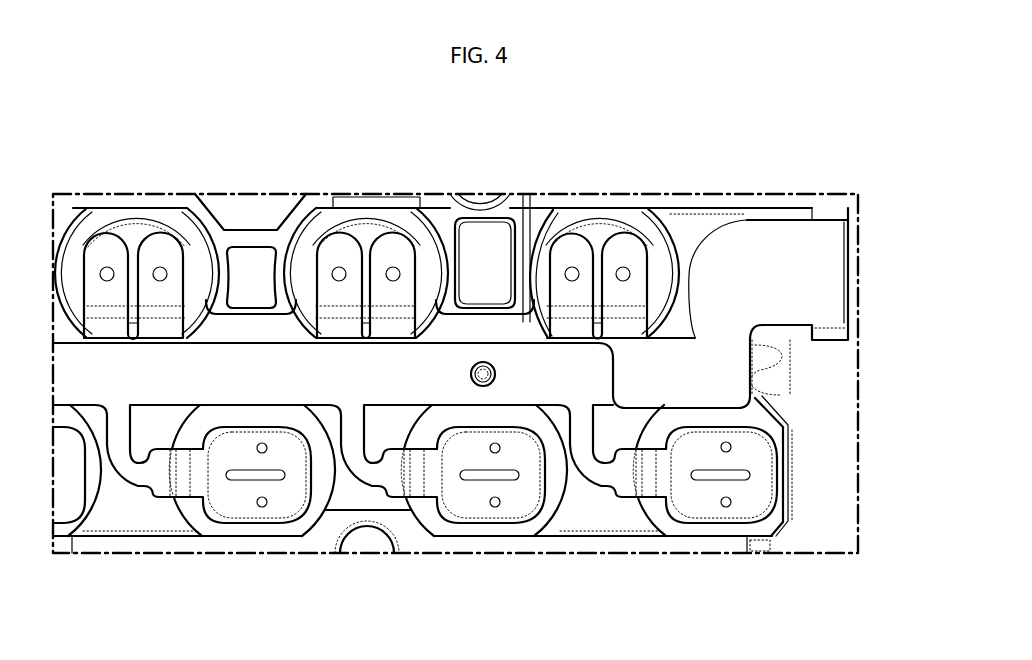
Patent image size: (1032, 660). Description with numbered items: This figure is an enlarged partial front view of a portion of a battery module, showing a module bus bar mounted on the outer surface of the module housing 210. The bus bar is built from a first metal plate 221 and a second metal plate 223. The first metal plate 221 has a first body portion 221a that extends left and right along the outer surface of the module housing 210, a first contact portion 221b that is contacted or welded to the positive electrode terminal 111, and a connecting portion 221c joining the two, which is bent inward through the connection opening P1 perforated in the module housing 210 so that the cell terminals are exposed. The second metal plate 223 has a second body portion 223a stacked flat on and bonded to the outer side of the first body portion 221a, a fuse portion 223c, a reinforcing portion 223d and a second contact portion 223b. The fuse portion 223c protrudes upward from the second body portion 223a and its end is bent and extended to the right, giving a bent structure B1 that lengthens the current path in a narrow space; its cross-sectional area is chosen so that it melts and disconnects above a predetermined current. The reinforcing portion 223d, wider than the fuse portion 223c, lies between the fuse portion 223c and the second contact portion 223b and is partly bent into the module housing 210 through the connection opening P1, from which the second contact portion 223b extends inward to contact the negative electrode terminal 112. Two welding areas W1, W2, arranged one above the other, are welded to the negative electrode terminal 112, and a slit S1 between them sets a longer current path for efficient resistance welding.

The module housing 210 is at (245, 207).
The positive electrode terminal 111 is at (370, 232).
The first metal plate 221 is at (672, 134).
The first body portion 221a is at (623, 237).
The first contact portion 221b is at (574, 241).
The connecting portion 221c is at (553, 325).
The connection opening P1 is at (633, 362).
The negative electrode terminal 112 is at (778, 411).
The welding area W1 is at (727, 447).
The slit S1 is at (750, 474).
The welding area W2 is at (727, 503).
The bent structure B1 is at (596, 472).
The second body portion 223a is at (444, 383).
The fuse portion 223c is at (582, 446).
The reinforcing portion 223d is at (597, 540).
The second contact portion 223b is at (706, 517).
The second metal plate 223 is at (677, 605).